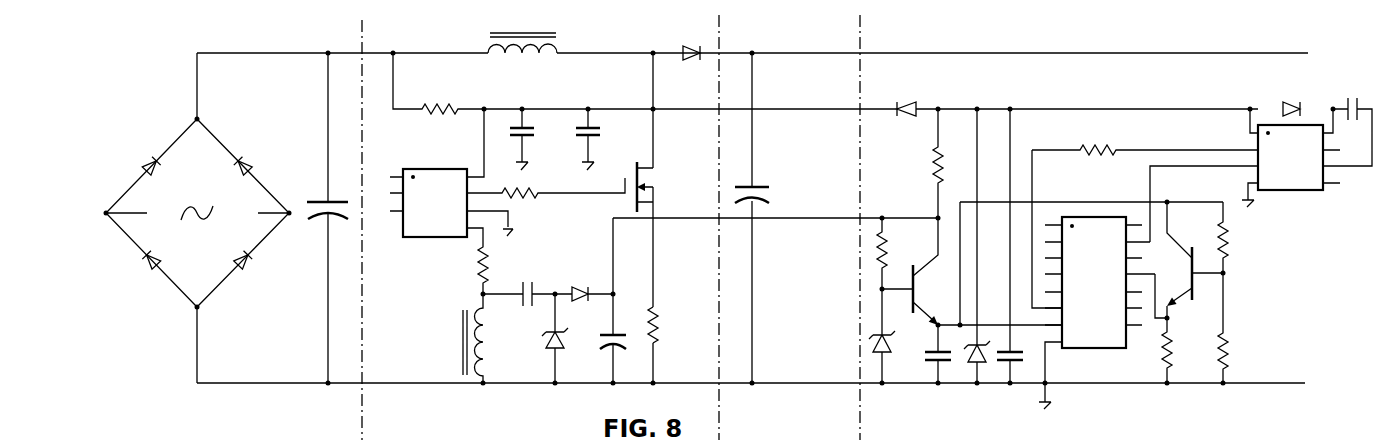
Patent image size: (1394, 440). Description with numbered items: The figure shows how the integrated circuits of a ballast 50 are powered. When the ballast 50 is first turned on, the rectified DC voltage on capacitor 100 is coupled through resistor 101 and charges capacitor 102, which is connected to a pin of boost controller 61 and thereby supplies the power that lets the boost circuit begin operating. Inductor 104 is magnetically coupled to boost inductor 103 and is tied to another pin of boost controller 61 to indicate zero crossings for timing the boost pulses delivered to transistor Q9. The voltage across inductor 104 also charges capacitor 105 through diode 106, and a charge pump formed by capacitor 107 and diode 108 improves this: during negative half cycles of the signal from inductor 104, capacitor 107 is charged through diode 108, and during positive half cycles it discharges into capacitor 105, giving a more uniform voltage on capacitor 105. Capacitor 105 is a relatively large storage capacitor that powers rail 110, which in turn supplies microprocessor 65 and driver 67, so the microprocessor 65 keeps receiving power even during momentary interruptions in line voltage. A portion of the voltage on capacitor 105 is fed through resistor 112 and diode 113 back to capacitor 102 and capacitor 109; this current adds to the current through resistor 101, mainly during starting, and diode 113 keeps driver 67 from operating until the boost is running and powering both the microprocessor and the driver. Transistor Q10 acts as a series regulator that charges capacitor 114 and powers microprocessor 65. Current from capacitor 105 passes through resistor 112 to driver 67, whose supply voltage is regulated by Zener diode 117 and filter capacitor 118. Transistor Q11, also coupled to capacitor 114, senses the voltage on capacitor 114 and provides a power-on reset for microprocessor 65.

The ballast 50 is at (183, 80).
The capacitor 100 is at (322, 202).
The resistor 101 is at (441, 100).
The capacitor 102 is at (606, 131).
The inductor 103 is at (533, 32).
The inductor 104 is at (460, 352).
The capacitor 105 is at (597, 340).
The diode 106 is at (584, 285).
The capacitor 107 is at (530, 278).
The diode 108 is at (544, 335).
The capacitor 109 is at (539, 131).
The rail 110 is at (768, 222).
The resistor 112 is at (922, 162).
The diode 113 is at (903, 101).
The capacitor 114 is at (922, 356).
The Zener diode 117 is at (967, 359).
The filter capacitor 118 is at (1026, 359).
The boost controller 61 is at (447, 168).
The microprocessor 65 is at (1085, 350).
The driver 67 is at (1280, 192).
The transistor Q9 is at (775, 218).
The transistor Q10 is at (920, 271).
The transistor Q11 is at (1197, 287).